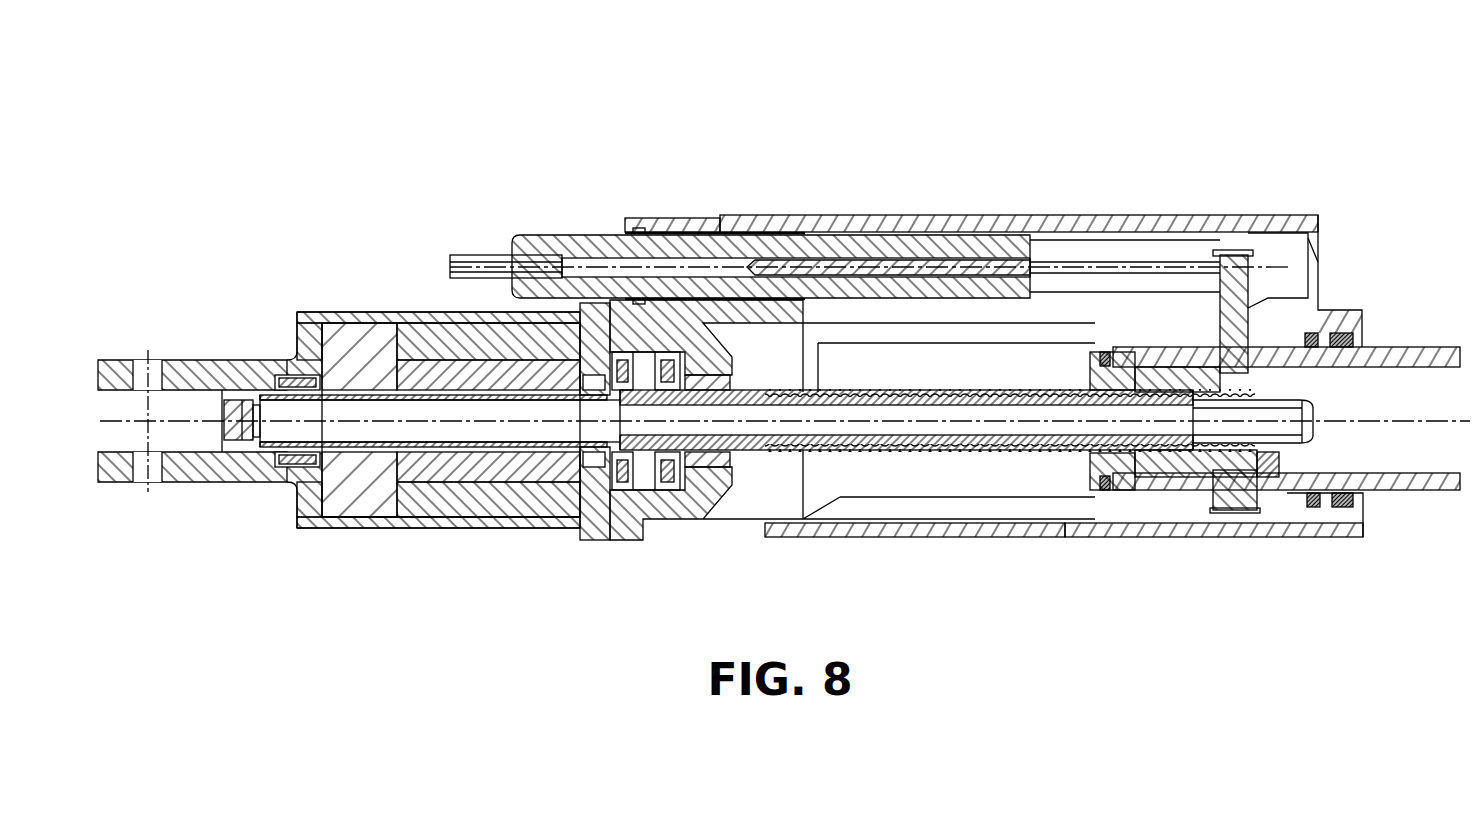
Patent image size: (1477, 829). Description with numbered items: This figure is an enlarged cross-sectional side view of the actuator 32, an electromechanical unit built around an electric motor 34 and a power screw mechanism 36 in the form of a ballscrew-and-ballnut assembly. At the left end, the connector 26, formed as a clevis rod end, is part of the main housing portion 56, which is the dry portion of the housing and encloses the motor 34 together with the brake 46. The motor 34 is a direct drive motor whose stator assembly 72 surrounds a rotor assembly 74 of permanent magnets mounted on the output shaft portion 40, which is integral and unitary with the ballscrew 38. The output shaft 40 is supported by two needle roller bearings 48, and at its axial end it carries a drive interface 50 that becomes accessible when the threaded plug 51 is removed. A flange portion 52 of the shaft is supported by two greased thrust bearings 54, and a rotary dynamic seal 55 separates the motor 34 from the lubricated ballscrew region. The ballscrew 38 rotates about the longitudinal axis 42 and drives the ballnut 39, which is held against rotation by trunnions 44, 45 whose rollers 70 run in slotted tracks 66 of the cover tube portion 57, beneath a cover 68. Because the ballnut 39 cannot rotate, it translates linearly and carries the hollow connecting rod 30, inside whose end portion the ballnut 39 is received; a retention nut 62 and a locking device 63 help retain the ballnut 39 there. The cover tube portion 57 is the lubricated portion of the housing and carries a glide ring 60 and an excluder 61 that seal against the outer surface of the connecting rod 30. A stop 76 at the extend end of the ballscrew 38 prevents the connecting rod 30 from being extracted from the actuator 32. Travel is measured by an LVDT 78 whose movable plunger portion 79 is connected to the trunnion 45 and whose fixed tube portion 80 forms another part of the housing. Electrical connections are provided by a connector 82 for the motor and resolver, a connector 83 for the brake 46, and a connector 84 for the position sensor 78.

The connector 26 is at (190, 380).
The connecting rod 30 is at (1388, 352).
The actuator 32 is at (805, 168).
The electric motor 34 is at (487, 505).
The power screw mechanism 36 is at (1073, 368).
The ballscrew 38 is at (975, 452).
The ballnut 39 is at (1165, 472).
The output shaft portion 40 is at (548, 450).
The longitudinal axis 42 is at (1348, 412).
The trunnion 44 is at (1240, 505).
The trunnion 45 is at (1233, 255).
The brake 46 is at (362, 342).
The needle roller bearings 48 is at (712, 368).
The drive interface 50 is at (277, 428).
The threaded plug 51 is at (230, 432).
The flange portion 52 is at (650, 488).
The thrust bearings 54 is at (626, 490).
The rotary dynamic seal 55 is at (590, 458).
The main housing portion 56 is at (438, 307).
The cover tube portion 57 is at (1010, 530).
The glide ring 60 is at (1313, 508).
The excluder 61 is at (1343, 508).
The retention nut 62 is at (1092, 482).
The locking device 63 is at (1104, 492).
The slotted tracks 66 is at (1185, 507).
The cover 68 is at (873, 532).
The rollers 70 is at (1212, 328).
The stator assembly 72 is at (427, 465).
The rotor assembly 74 is at (447, 497).
The stop 76 is at (1268, 395).
The LVDT 78 is at (943, 245).
The movable plunger portion 79 is at (1115, 262).
The fixed tube portion 80 is at (873, 245).
The connector 82 is at (400, 498).
The connector 83 is at (345, 500).
The connector 84 is at (474, 263).